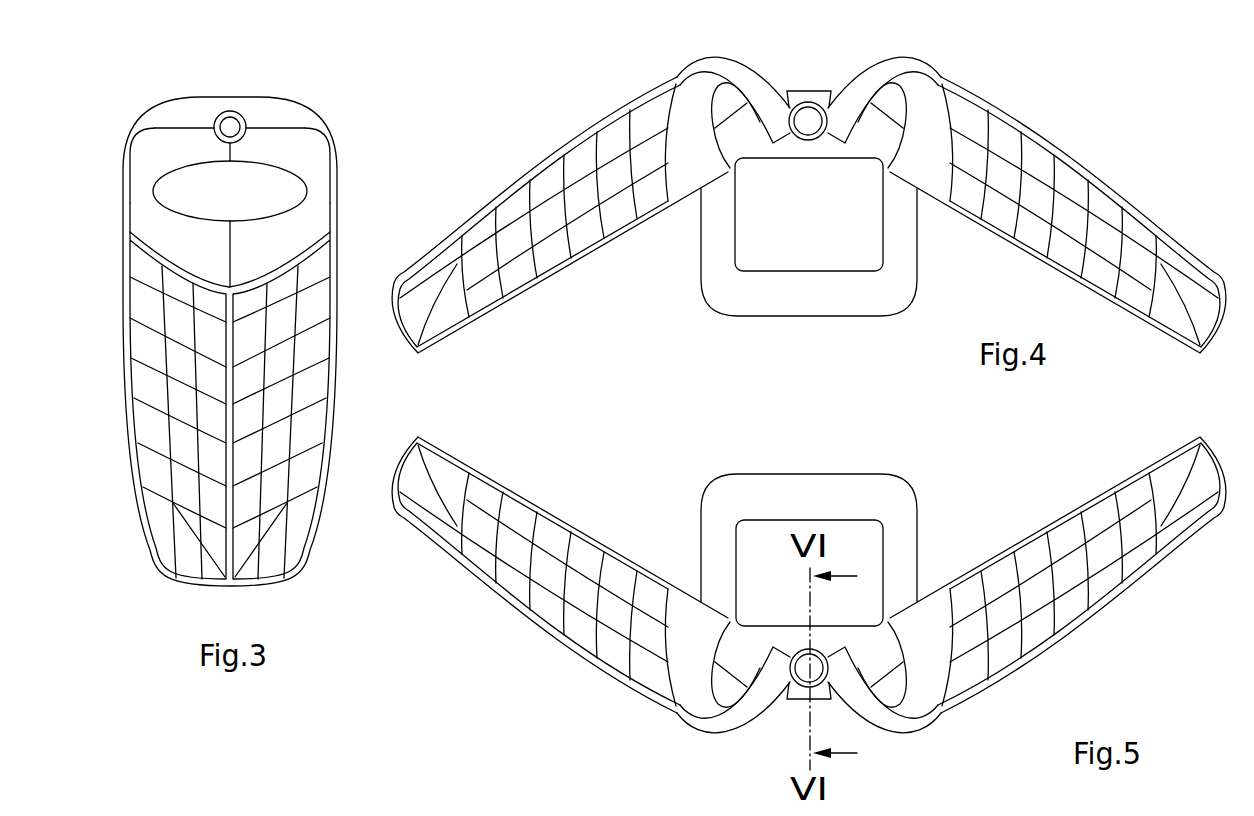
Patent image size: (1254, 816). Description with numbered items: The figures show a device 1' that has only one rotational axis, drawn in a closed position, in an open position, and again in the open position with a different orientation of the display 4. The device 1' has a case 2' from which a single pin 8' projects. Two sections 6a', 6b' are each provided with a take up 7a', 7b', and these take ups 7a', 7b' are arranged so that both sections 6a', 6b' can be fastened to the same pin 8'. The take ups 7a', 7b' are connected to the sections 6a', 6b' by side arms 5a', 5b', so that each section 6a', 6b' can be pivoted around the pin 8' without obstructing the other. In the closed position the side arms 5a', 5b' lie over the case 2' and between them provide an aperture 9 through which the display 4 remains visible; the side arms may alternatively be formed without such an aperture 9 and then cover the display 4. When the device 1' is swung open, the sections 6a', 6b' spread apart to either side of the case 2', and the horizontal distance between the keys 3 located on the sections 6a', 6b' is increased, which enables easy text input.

In FIG. 3, the device 1' is at (376, 71).
In FIG. 4, the device 1' is at (1087, 65).
In FIG. 5, the device 1' is at (986, 466).
In FIG. 3, the case 2' is at (230, 320).
In FIG. 4, the case 2' is at (784, 231).
In FIG. 5, the case 2' is at (809, 555).
In FIG. 4, the keys 3 is at (1070, 170).
In FIG. 5, the keys 3 is at (1068, 610).
In FIG. 3, the display 4 is at (192, 187).
In FIG. 4, the display 4 is at (772, 253).
In FIG. 5, the display 4 is at (762, 545).
In FIG. 3, the side arm 5a' is at (321, 379).
In FIG. 4, the side arm 5a' is at (923, 111).
In FIG. 5, the side arm 5a' is at (708, 688).
In FIG. 3, the side arm 5b' is at (146, 379).
In FIG. 4, the side arm 5b' is at (693, 115).
In FIG. 5, the side arm 5b' is at (913, 687).
In FIG. 3, the section 6a' is at (356, 165).
In FIG. 4, the section 6a' is at (1058, 215).
In FIG. 5, the section 6a' is at (560, 575).
In FIG. 3, the section 6b' is at (116, 155).
In FIG. 4, the section 6b' is at (560, 215).
In FIG. 5, the section 6b' is at (1058, 575).
In FIG. 3, the take up 7a' is at (275, 90).
In FIG. 4, the take up 7a' is at (879, 81).
In FIG. 5, the take up 7a' is at (733, 723).
In FIG. 3, the take up 7b' is at (179, 92).
In FIG. 4, the take up 7b' is at (733, 83).
In FIG. 5, the take up 7b' is at (884, 723).
In FIG. 3, the pin 8' is at (222, 98).
In FIG. 4, the pin 8' is at (804, 87).
In FIG. 5, the pin 8' is at (803, 701).
In FIG. 3, the aperture 9 is at (167, 208).